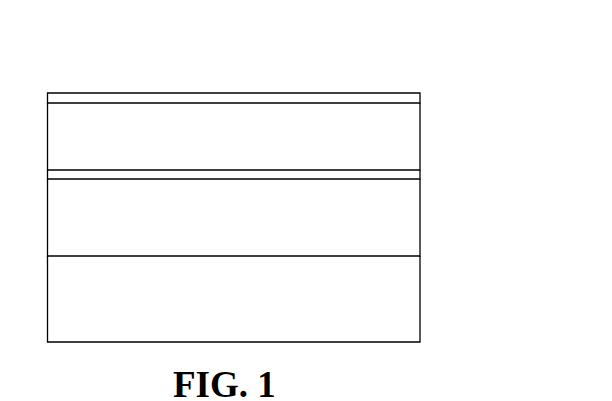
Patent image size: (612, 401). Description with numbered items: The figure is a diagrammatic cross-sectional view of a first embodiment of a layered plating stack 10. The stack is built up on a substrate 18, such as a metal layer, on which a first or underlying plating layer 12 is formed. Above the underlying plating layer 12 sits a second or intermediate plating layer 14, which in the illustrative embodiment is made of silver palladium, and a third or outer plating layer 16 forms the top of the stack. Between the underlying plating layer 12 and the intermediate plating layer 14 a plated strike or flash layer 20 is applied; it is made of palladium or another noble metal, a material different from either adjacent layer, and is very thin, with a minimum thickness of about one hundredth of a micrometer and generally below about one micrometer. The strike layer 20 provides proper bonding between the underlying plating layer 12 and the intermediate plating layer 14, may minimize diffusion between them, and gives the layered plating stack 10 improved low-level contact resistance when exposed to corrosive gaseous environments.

The layered plating stack 10 is at (368, 65).
The underlying plating layer 12 is at (403, 215).
The intermediate plating layer 14 is at (403, 137).
The outer plating layer 16 is at (400, 102).
The substrate 18 is at (403, 292).
The strike layer 20 is at (403, 177).